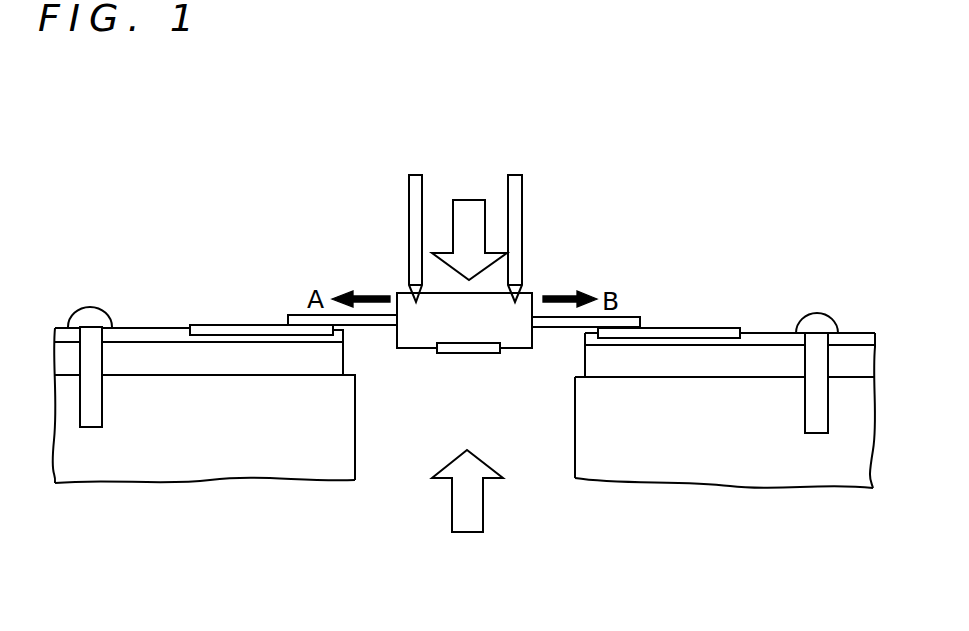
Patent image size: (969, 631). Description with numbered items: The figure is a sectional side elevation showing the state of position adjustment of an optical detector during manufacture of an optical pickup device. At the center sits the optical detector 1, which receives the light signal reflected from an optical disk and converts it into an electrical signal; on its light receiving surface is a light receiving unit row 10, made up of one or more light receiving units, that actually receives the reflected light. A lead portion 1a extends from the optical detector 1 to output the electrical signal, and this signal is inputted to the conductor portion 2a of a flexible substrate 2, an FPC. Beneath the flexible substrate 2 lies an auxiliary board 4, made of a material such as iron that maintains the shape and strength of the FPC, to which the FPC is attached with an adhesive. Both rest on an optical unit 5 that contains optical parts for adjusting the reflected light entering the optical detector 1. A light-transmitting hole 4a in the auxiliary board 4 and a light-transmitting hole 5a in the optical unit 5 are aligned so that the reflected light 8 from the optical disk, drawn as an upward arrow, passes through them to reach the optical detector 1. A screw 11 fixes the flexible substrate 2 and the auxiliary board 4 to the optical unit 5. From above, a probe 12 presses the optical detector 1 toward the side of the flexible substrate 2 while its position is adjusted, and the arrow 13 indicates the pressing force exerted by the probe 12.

The optical detector 1 is at (527, 302).
The lead portion 1a is at (618, 322).
The flexible substrate 2 is at (760, 338).
The conductor portion 2a is at (693, 328).
The auxiliary board 4 is at (152, 362).
The light-transmitting hole 4a is at (587, 360).
The optical unit 5 is at (718, 478).
The light-transmitting hole 5a is at (575, 403).
The reflected light 8 is at (477, 522).
The light receiving unit row 10 is at (451, 347).
The screw 11 is at (817, 327).
The probe 12 is at (408, 200).
The arrow 13 is at (470, 208).